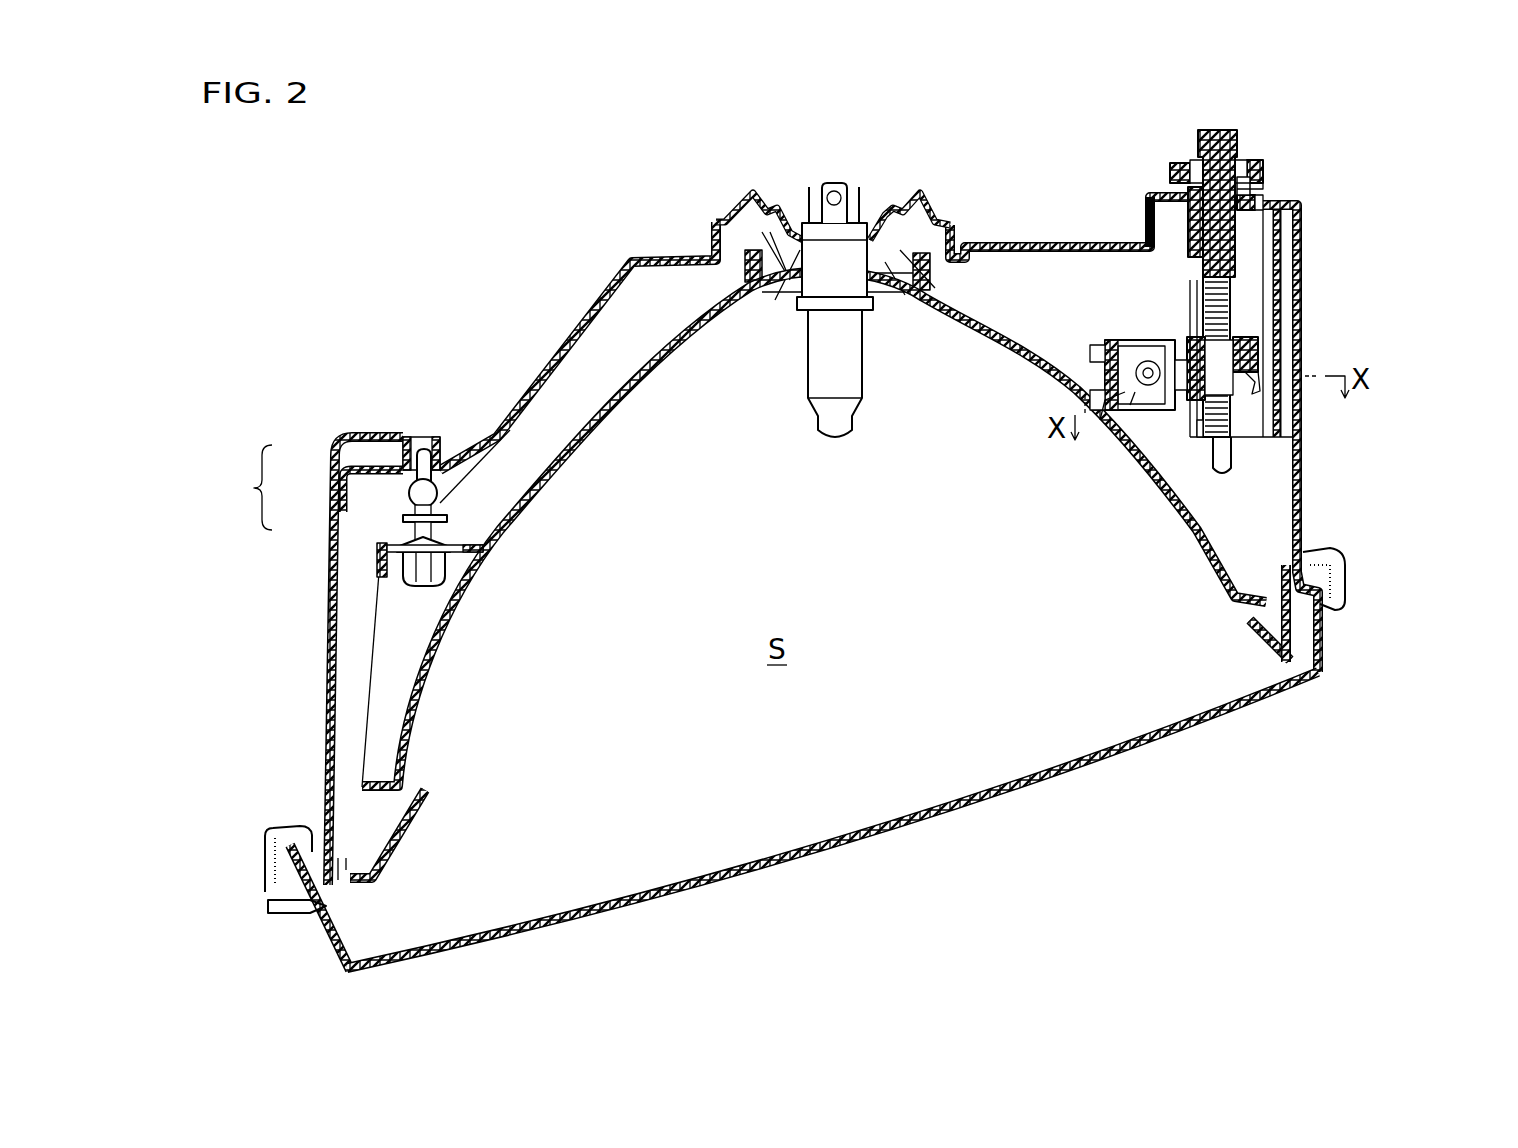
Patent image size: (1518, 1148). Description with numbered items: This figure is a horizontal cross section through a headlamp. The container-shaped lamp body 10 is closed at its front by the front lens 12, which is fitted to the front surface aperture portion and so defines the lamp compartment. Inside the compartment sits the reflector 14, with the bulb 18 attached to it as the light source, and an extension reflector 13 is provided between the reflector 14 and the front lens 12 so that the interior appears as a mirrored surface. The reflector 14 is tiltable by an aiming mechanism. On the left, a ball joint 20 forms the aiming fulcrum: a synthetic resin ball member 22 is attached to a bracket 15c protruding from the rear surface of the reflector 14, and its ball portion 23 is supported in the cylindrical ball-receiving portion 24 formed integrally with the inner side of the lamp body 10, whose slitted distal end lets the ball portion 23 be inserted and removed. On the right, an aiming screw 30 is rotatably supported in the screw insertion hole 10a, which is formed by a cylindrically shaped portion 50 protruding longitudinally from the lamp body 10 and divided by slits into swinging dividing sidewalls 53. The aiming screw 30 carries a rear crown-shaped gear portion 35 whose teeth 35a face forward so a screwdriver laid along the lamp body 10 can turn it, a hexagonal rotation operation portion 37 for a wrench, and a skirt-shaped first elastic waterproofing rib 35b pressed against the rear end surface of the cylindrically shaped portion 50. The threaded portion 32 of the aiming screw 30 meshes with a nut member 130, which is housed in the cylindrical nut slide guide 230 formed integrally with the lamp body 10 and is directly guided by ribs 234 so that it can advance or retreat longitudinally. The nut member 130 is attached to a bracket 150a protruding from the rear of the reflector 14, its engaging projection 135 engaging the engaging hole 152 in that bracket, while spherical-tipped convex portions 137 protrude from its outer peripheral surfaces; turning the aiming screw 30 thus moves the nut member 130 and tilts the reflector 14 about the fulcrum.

The lamp body 10 is at (595, 308).
The screw insertion hole 10a is at (1198, 245).
The front lens 12 is at (995, 812).
The extension reflector 13 is at (410, 848).
The reflector 14 is at (985, 318).
The reflector bracket 15c is at (378, 555).
The bulb 18 is at (863, 363).
The ball joint 20 is at (217, 487).
The ball member 22 is at (405, 582).
The ball portion 23 is at (405, 490).
The ball-receiving portion 24 is at (400, 460).
The aiming screw 30 is at (1240, 300).
The threaded portion 32 is at (1255, 412).
The crown-shaped gear portion 35 is at (1180, 172).
The teeth 35a is at (1258, 180).
The first elastic waterproofing rib 35b is at (1240, 168).
The rotation operation portion 37 is at (1207, 132).
The cylindrically shaped portion 50 is at (1252, 195).
The dividing sidewall 53 is at (1195, 260).
The nut member 130 is at (1243, 345).
The engaging projection 135 is at (1112, 388).
The convex portion 137 is at (1135, 392).
The bracket 150a is at (1140, 412).
The engaging hole 152 is at (1120, 358).
The nut slide guide 230 is at (1250, 447).
The rib 234 is at (1262, 272).